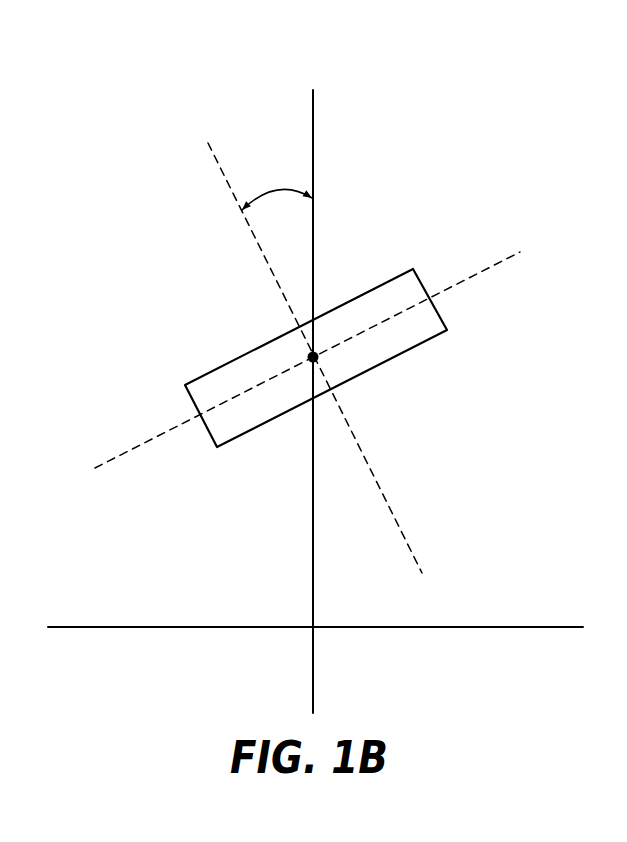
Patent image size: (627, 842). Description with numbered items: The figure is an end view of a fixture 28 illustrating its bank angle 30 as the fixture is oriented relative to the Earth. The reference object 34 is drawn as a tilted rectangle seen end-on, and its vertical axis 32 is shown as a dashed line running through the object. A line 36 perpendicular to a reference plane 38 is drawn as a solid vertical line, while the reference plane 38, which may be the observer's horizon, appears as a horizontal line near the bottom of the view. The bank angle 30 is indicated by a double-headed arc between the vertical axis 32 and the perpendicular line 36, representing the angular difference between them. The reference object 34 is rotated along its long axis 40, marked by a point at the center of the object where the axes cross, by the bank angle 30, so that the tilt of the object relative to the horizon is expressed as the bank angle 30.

The sensor arrangement 28 is at (105, 140).
The bank angle 30 is at (262, 190).
The vertical axis 32 is at (275, 275).
The reference object 34 is at (413, 270).
The line perpendicular to a reference plane 36 is at (313, 90).
The reference plane 38 is at (483, 626).
The long axis 40 is at (315, 360).